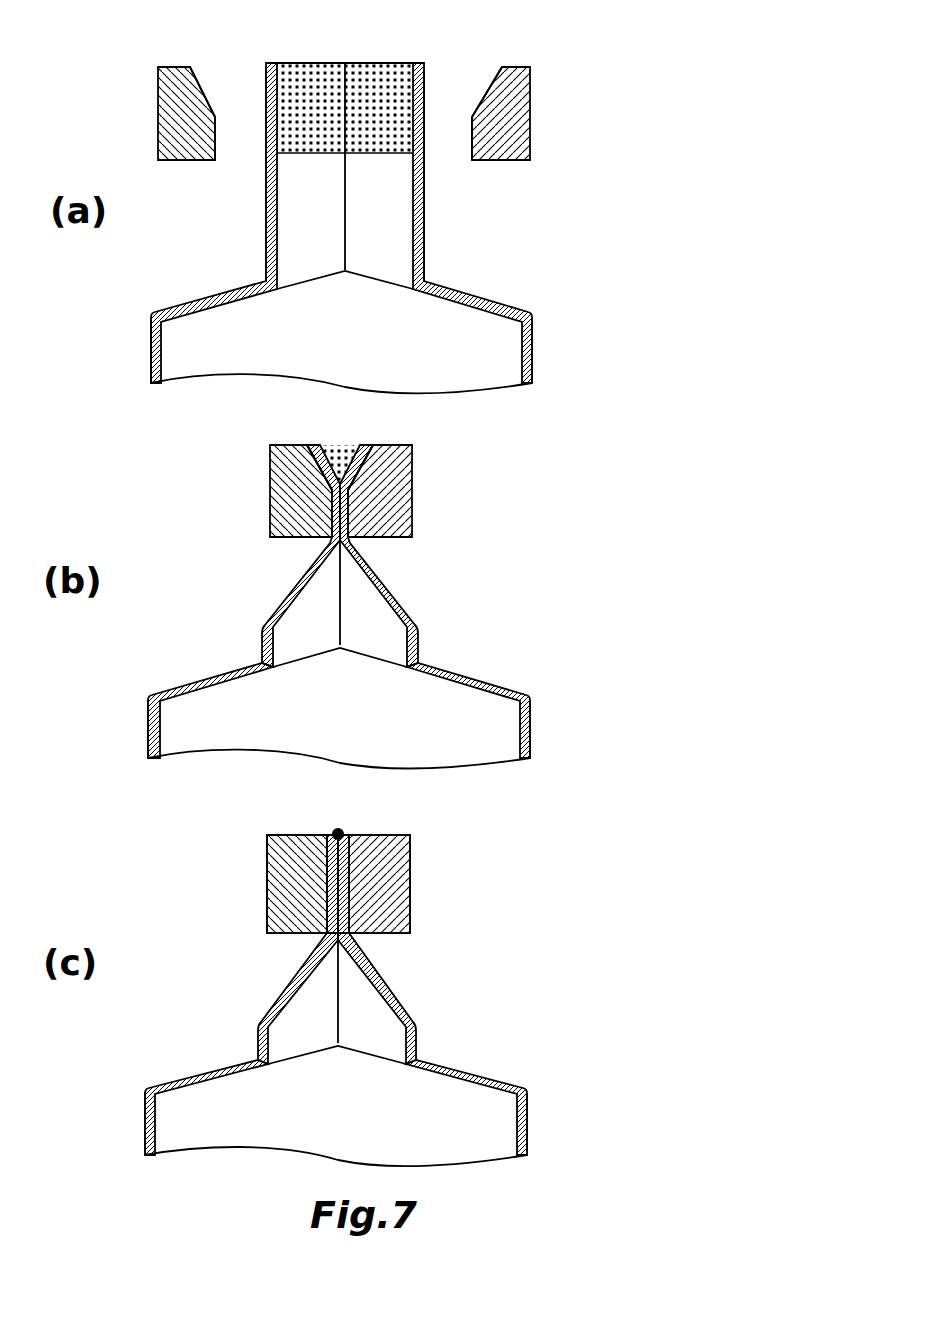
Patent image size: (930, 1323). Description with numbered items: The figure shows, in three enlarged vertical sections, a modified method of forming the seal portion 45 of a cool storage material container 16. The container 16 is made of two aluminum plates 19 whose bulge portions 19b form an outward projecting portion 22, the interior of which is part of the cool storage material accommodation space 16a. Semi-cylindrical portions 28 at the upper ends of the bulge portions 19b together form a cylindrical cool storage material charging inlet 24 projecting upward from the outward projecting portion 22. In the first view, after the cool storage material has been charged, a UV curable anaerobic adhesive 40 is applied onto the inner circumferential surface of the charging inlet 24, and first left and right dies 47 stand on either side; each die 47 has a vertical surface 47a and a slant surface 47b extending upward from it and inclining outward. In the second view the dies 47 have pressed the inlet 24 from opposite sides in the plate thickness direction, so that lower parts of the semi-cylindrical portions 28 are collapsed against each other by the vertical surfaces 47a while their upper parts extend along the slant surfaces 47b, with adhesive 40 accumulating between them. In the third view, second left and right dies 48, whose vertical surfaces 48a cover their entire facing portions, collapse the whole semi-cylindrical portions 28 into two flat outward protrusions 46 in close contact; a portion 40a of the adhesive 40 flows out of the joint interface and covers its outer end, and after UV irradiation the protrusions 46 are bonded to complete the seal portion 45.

The cool storage material container 16 is at (518, 270).
The cool storage material accommodation space 16a is at (522, 333).
The aluminum plate 19 is at (152, 384).
The bulge portion 19b is at (151, 355).
The outward projecting portion 22 is at (532, 381).
The cool storage material charging inlet 24 is at (425, 241).
The semi-cylindrical portion 28 is at (269, 63).
The UV curable anaerobic adhesive 40 is at (348, 78).
The outflow portion of UV curable anaerobic adhesive 40a is at (338, 832).
The seal portion 45 is at (360, 845).
The outward protrusion 46 is at (270, 921).
The first die 47 is at (172, 112).
The vertical surface 47a is at (216, 146).
The slant surface 47b is at (202, 95).
The second die 48 is at (270, 913).
The vertical surface 48a is at (300, 868).